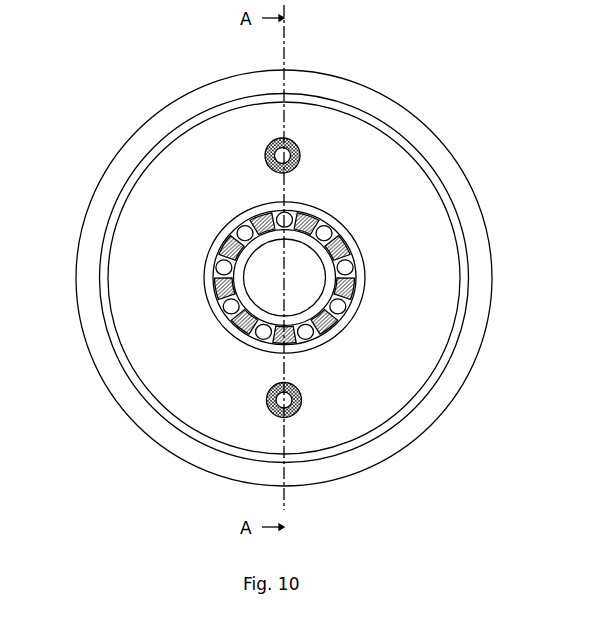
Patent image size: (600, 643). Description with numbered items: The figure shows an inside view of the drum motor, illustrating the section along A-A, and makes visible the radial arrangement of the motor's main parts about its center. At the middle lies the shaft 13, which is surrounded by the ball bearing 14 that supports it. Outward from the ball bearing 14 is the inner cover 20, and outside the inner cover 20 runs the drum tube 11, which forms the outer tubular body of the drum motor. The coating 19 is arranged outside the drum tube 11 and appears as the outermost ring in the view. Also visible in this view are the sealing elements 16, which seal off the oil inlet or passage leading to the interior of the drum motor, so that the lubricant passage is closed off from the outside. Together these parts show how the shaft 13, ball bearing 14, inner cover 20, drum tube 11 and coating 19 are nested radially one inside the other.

The drum tube 11 is at (398, 132).
The shaft 13 is at (262, 292).
The ball bearing 14 is at (224, 238).
The sealing elements 16 is at (267, 150).
The coating 19 is at (356, 88).
The inner cover 20 is at (152, 230).